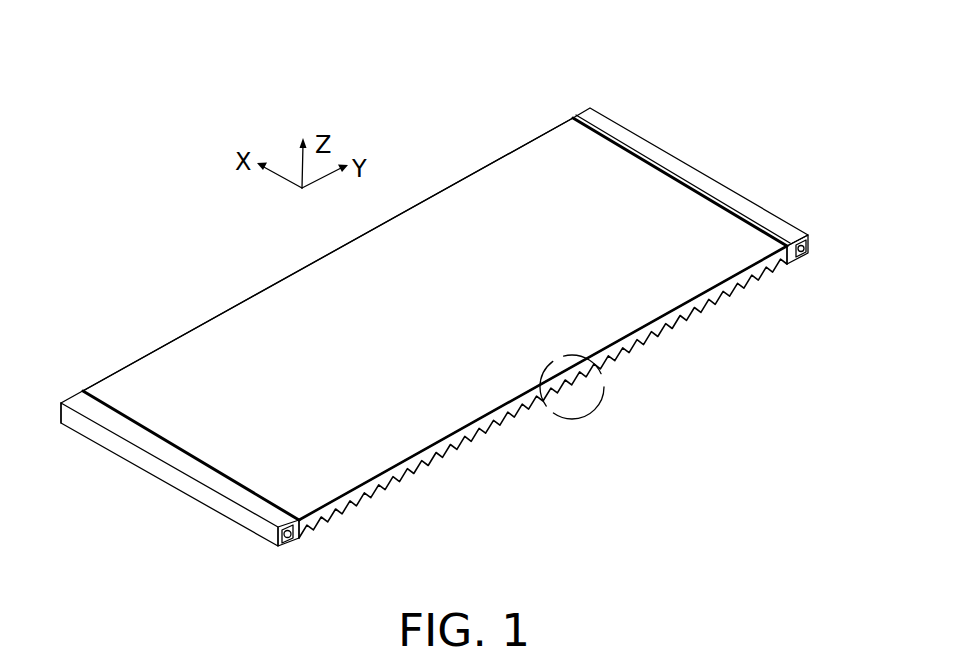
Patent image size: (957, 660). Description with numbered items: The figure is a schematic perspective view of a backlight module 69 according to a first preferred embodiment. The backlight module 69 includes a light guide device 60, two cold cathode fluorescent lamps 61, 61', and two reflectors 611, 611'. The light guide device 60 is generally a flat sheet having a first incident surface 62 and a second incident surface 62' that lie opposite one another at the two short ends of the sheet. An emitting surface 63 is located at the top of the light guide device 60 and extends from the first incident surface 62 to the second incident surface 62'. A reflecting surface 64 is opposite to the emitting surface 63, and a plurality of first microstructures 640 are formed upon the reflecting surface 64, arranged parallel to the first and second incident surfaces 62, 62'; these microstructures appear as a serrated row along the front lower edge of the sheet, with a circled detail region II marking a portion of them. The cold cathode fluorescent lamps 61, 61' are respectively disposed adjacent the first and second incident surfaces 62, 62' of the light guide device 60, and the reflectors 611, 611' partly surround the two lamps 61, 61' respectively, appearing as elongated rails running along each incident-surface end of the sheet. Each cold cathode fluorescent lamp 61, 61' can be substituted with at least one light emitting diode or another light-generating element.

The backlight module 69 is at (465, 338).
The light guide device 60 is at (465, 356).
The emitting surface 63 is at (158, 372).
The reflecting surface 64 is at (543, 405).
The first microstructures 640 is at (575, 398).
The cold cathode fluorescent lamp 61 is at (215, 497).
The reflector 611 is at (169, 484).
The first incident surface 62 is at (326, 551).
The cold cathode fluorescent lamp 61' is at (721, 210).
The reflector 611' is at (690, 177).
The second incident surface 62' is at (812, 276).
The detail region II is at (602, 402).